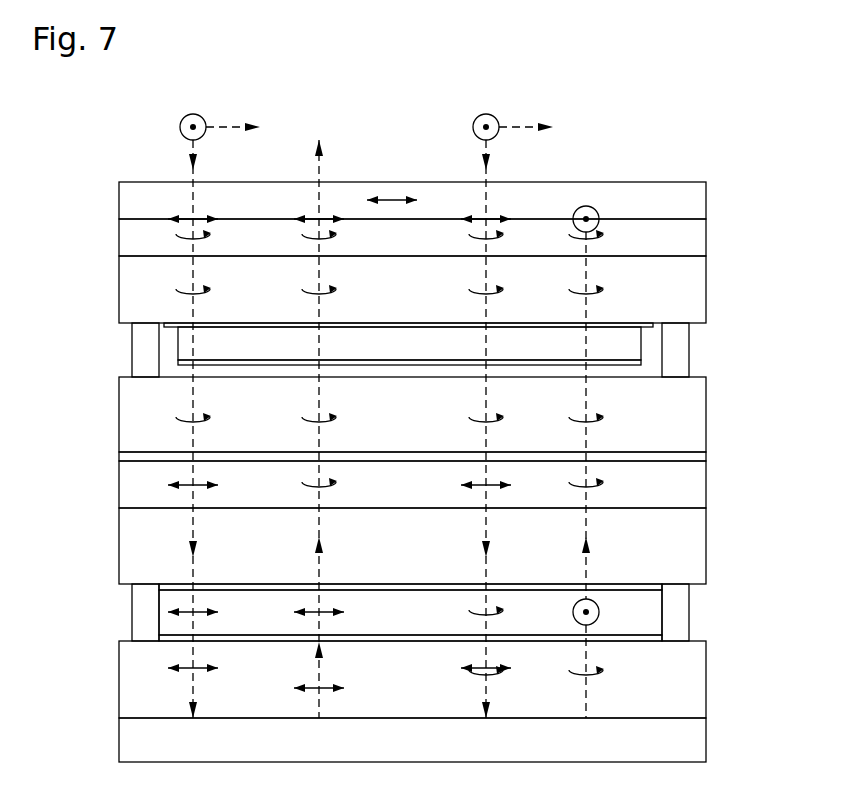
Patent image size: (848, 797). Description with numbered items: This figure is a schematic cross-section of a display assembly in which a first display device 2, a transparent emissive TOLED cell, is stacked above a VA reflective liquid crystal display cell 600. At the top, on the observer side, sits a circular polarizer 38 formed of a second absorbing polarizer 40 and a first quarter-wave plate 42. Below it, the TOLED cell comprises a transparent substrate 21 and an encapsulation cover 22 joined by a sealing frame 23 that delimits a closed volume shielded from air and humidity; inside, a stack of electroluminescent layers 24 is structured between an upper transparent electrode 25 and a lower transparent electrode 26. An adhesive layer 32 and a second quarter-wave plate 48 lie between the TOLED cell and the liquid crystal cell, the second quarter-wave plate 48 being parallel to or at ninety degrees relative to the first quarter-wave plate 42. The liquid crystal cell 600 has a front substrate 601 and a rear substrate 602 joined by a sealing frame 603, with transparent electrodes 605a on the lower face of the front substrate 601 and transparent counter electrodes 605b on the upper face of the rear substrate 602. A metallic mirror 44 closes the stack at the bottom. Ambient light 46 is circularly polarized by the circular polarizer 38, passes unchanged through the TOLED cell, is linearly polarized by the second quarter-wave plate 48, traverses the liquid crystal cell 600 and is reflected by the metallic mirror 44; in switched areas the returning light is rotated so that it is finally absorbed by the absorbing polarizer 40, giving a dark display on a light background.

The first display device 2 is at (416, 354).
The transparent substrate 21 is at (692, 288).
The encapsulation cover 22 is at (678, 415).
The sealing frame 23 is at (670, 360).
The stack of electroluminescent layers 24 is at (627, 347).
The upper transparent electrode 25 is at (632, 325).
The lower transparent electrode 26 is at (608, 362).
The adhesive layer 32 is at (683, 461).
The circular polarizer 38 is at (410, 216).
The second absorbing polarizer 40 is at (697, 196).
The first quarter-wave plate 42 is at (697, 230).
The metallic mirror 44 is at (693, 750).
The ambient light 46 is at (193, 114).
The second quarter-wave plate 48 is at (689, 485).
The VA reflective liquid crystal display cell 600 is at (415, 613).
The front substrate 601 is at (686, 529).
The rear substrate 602 is at (693, 682).
The sealing frame 603 is at (677, 613).
The transparent electrodes 605a is at (608, 588).
The transparent counter electrodes 605b is at (620, 637).